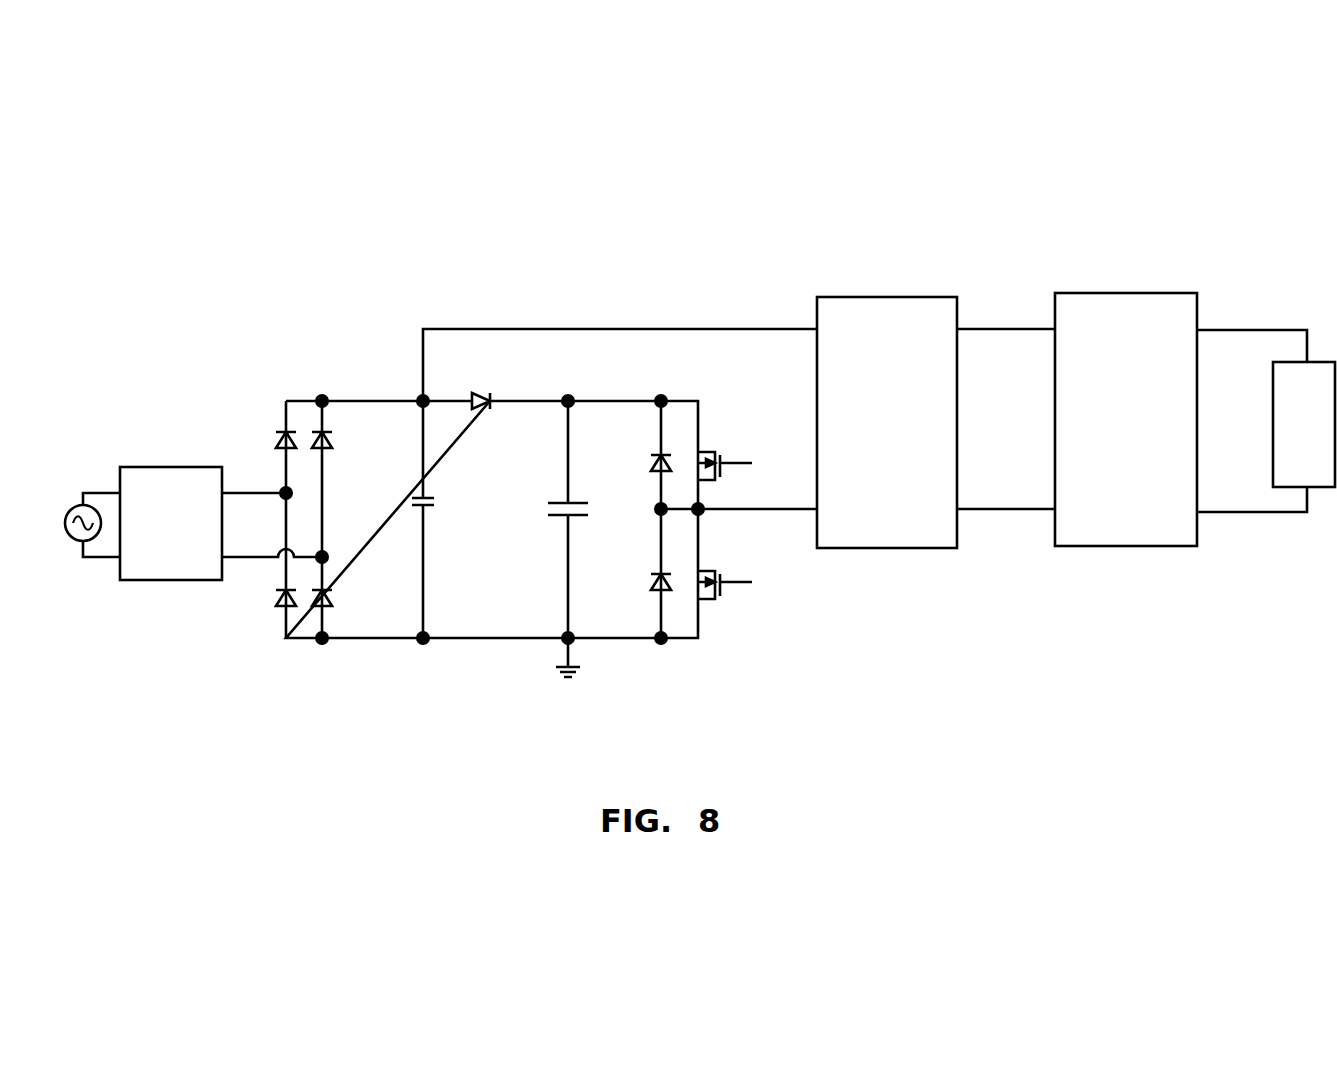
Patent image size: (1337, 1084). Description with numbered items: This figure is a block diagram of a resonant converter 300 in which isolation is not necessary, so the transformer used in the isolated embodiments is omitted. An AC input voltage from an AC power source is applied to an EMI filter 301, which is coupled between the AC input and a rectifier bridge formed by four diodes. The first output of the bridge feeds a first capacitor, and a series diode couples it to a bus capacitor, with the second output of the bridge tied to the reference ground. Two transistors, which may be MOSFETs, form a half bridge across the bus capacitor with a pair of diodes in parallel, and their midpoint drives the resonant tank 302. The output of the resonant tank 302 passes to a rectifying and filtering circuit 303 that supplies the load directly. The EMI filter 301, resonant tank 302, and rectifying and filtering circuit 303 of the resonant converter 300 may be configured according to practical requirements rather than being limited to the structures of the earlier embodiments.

The resonant converter 300 is at (1250, 247).
The EMI filter 301 is at (139, 580).
The resonant tank 302 is at (829, 548).
The rectifying and filtering circuit 303 is at (1076, 546).